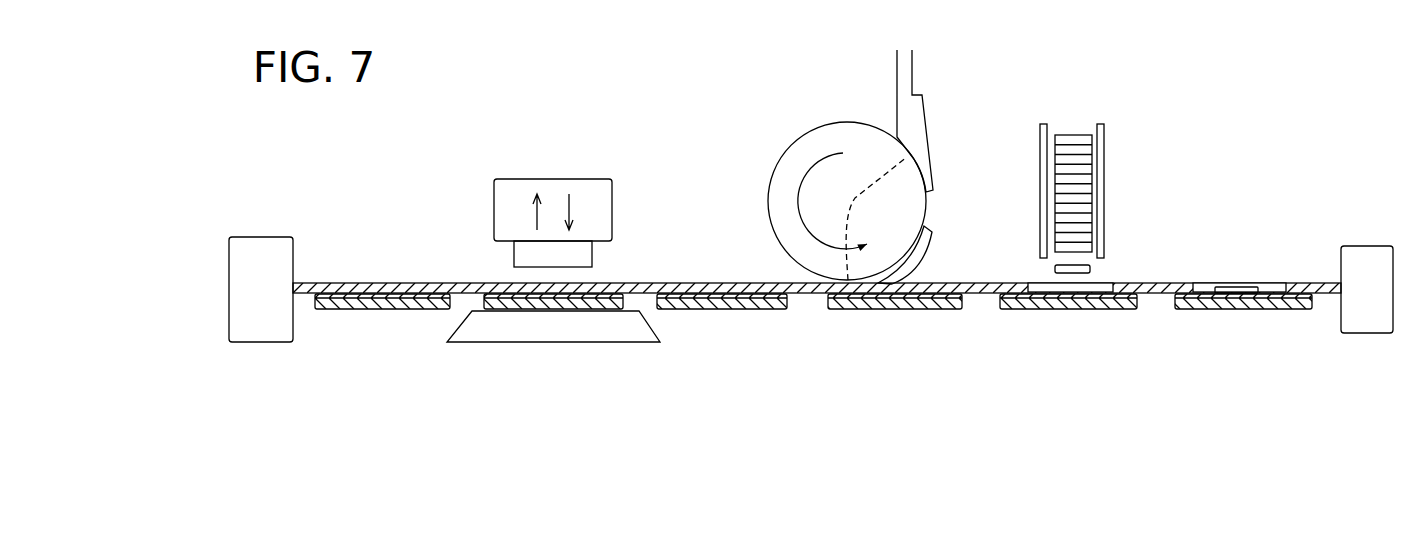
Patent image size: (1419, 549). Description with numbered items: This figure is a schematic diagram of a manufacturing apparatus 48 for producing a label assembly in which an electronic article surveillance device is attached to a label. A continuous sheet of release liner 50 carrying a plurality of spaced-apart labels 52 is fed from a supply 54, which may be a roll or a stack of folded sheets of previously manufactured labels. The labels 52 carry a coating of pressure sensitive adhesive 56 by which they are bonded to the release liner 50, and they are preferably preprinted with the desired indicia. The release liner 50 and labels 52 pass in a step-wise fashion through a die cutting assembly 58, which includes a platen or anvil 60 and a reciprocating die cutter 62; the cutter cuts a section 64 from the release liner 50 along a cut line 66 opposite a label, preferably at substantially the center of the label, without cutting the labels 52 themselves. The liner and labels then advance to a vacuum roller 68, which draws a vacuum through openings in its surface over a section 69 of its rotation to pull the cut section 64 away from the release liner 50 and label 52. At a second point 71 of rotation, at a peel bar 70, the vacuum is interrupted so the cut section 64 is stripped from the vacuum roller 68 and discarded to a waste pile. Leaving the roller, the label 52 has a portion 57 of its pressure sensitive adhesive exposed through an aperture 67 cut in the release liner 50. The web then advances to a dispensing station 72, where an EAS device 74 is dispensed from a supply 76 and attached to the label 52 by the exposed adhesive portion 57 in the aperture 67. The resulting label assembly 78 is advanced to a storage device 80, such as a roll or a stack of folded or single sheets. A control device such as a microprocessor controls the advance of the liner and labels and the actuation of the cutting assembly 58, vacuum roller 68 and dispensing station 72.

The manufacturing apparatus 48 is at (643, 148).
The release liner 50 is at (335, 282).
The labels 52 is at (335, 310).
The supply 54 is at (262, 237).
The pressure sensitive adhesive 56 is at (455, 307).
The portion of pressure sensitive adhesive 57 is at (928, 283).
The die cutting assembly 58 is at (532, 178).
The anvil 60 is at (530, 343).
The reciprocating die cutter 62 is at (592, 256).
The cut section 64 is at (585, 282).
The cut line 66 is at (507, 282).
The aperture 67 is at (1036, 280).
The vacuum roller 68 is at (838, 121).
The section of roller 69 is at (852, 216).
The peel bar 70 is at (903, 70).
The second point 71 is at (900, 154).
The dispensing station 72 is at (1118, 150).
The EAS device 74 is at (1092, 268).
The supply 76 is at (1070, 135).
The label assembly 78 is at (1298, 320).
The storage device 80 is at (1368, 246).